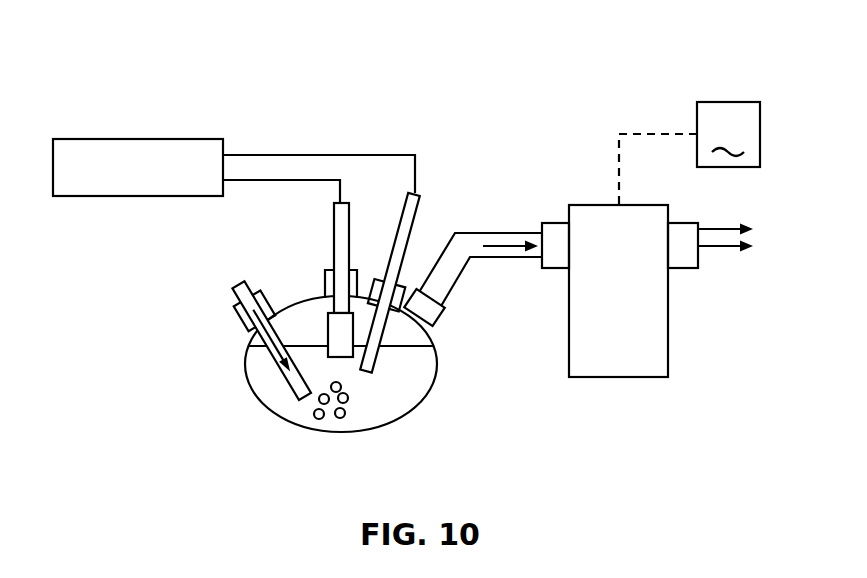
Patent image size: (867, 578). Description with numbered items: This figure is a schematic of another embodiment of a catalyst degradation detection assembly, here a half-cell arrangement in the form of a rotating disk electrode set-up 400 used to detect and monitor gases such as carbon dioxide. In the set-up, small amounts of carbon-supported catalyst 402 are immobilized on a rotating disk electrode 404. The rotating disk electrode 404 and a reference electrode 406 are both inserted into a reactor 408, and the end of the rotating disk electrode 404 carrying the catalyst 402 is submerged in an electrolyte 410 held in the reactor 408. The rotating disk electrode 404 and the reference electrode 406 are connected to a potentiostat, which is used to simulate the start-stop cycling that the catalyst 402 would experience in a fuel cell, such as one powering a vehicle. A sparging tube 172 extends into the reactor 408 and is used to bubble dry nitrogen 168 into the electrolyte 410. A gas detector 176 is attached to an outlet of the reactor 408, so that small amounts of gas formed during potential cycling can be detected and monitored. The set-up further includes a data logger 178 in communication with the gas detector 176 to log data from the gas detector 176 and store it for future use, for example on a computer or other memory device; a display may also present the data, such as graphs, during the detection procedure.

The rotating disk electrode (RDE) set-up 400 is at (472, 153).
The carbon-supported catalyst 402 is at (341, 357).
The rotating disk electrode 404 is at (341, 229).
The reference electrode 406 is at (416, 219).
The reactor 408 is at (255, 397).
The electrolyte 410 is at (415, 382).
The sparging tube 172 is at (232, 289).
The dry nitrogen 168 is at (238, 320).
The gas detector 176 is at (635, 322).
The data logger 178 is at (689, 153).